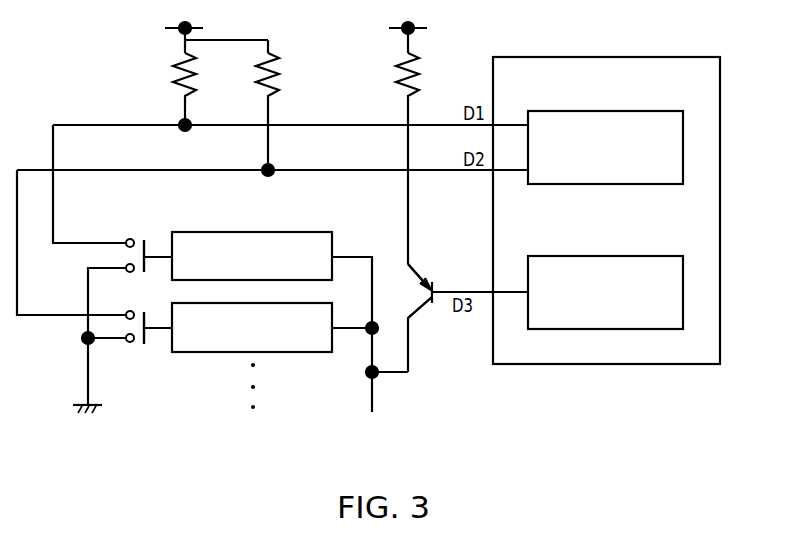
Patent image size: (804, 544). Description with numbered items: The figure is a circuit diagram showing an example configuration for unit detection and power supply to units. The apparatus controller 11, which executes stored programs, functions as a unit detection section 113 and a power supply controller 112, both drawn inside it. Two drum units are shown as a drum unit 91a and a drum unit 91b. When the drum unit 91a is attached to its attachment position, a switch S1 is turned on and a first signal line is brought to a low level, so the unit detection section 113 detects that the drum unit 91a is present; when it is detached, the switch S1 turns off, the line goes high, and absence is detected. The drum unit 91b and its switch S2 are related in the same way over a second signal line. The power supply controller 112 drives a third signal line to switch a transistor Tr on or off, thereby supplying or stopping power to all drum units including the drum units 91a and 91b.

The apparatus controller 11 is at (720, 92).
The unit detection section 113 is at (683, 140).
The power supply controller 112 is at (683, 287).
The drum unit 91a is at (302, 231).
The drum unit 91b is at (302, 353).
The switch S1 is at (134, 240).
The switch S2 is at (134, 342).
The transistor Tr is at (418, 274).